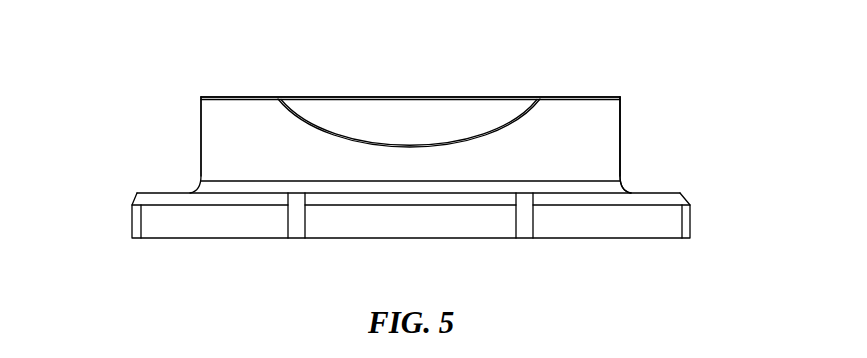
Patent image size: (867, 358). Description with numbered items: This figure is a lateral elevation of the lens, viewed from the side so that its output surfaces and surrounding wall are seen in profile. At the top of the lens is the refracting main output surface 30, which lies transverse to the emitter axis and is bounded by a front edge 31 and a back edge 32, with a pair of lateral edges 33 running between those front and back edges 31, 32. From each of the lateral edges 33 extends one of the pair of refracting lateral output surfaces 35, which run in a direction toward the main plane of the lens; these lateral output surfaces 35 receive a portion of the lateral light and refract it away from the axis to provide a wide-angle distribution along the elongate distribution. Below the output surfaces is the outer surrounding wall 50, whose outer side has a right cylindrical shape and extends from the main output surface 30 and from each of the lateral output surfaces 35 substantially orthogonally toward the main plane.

The main output surface 30 is at (250, 93).
The front edge 31 is at (202, 97).
The back edge 32 is at (620, 96).
The lateral edges 33 is at (382, 97).
The lateral output surfaces 35 is at (458, 118).
The outer surrounding wall 50 is at (620, 143).